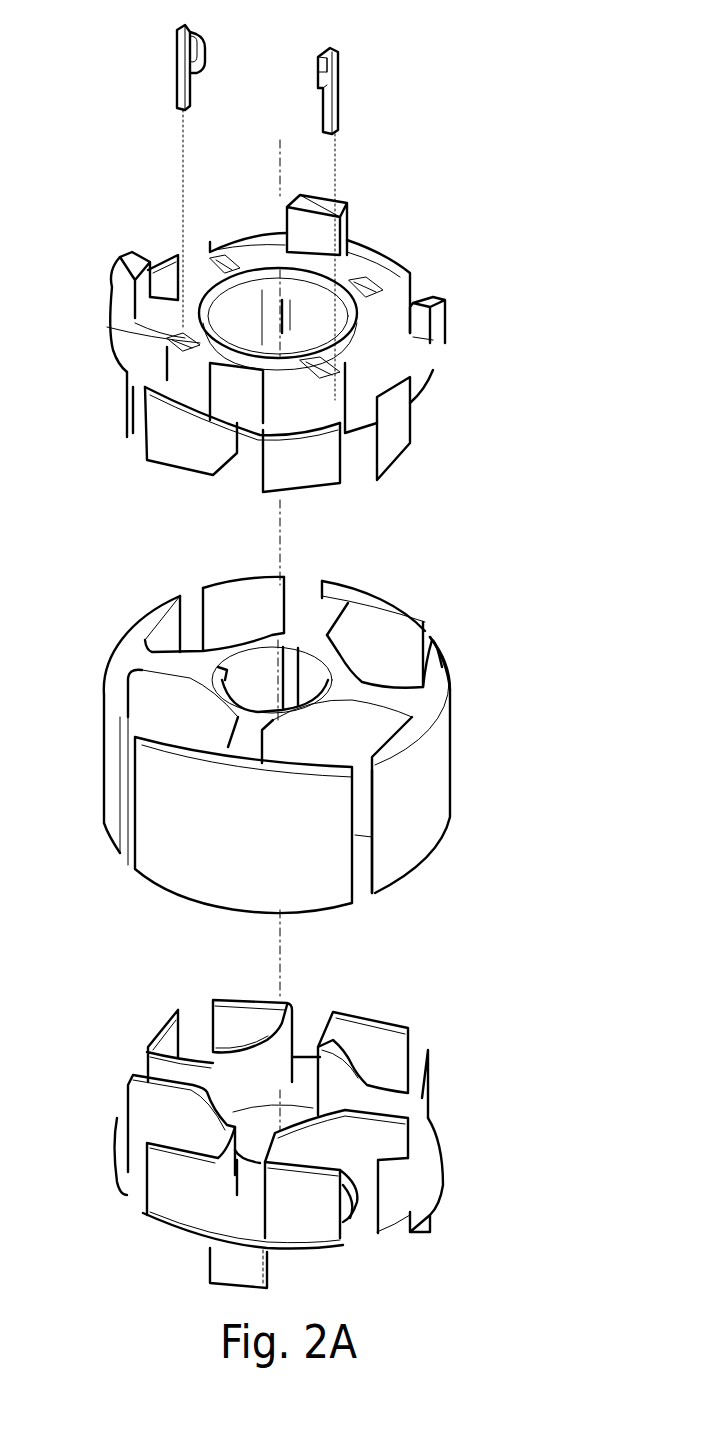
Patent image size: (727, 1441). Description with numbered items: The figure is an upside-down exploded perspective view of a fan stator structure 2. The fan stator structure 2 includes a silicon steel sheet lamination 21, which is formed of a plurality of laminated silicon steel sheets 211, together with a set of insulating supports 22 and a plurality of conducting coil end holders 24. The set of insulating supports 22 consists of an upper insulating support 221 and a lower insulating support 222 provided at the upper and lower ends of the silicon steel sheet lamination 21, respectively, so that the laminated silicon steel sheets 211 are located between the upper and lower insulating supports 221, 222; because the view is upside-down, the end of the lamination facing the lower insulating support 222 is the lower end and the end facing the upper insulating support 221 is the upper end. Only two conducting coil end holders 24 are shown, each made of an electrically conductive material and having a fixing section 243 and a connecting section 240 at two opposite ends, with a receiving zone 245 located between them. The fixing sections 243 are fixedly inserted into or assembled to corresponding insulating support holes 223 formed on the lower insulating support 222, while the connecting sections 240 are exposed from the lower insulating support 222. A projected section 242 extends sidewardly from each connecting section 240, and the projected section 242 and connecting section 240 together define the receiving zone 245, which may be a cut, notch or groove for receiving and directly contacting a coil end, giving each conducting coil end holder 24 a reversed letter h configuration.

The fan stator structure 2 is at (497, 290).
The silicon steel sheet lamination 21 is at (385, 605).
The laminated silicon steel sheets 211 is at (435, 752).
The set of insulating supports 22 is at (566, 1260).
The upper insulating support 221 is at (445, 1148).
The lower insulating support 222 is at (365, 262).
The insulating support holes 223 is at (110, 328).
The conducting coil end holders 24 is at (342, 82).
The connecting section 240 is at (178, 30).
The projected section 242 is at (205, 50).
The fixing section 243 is at (176, 100).
The receiving zone 245 is at (200, 62).